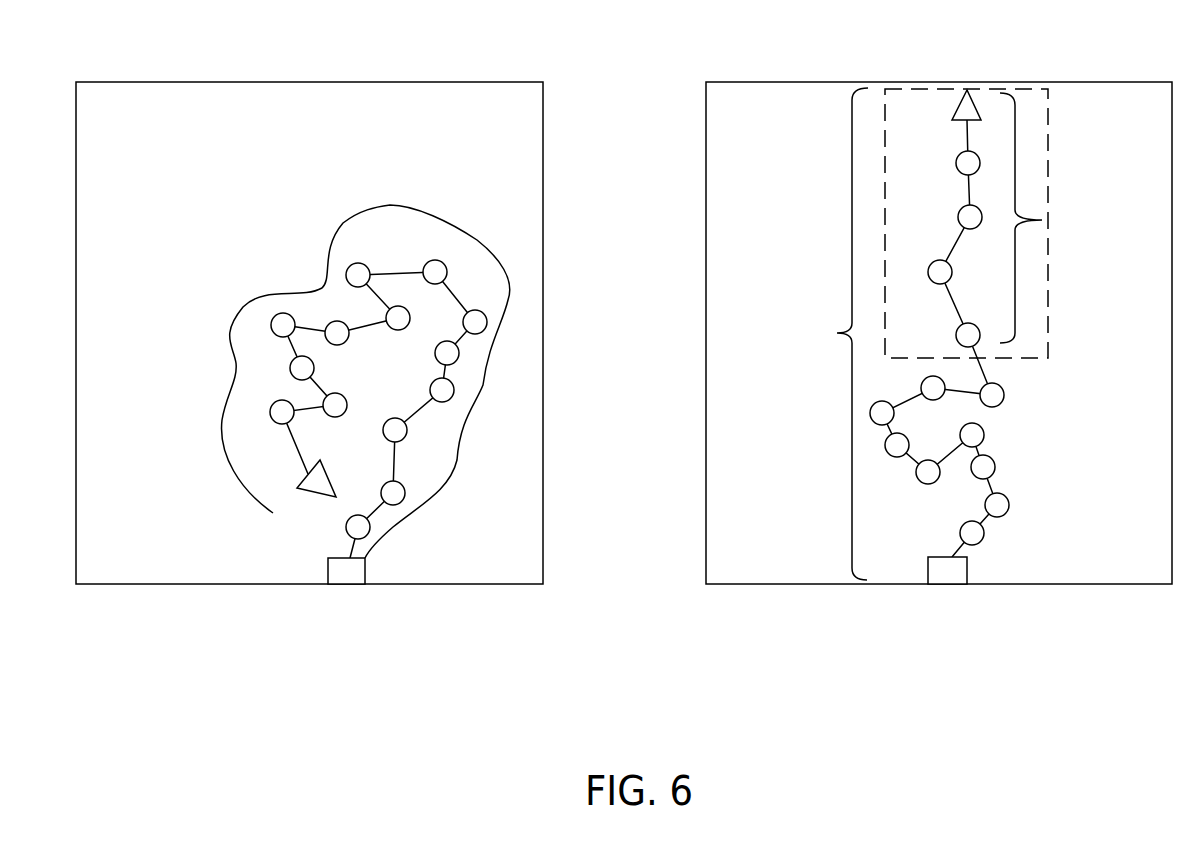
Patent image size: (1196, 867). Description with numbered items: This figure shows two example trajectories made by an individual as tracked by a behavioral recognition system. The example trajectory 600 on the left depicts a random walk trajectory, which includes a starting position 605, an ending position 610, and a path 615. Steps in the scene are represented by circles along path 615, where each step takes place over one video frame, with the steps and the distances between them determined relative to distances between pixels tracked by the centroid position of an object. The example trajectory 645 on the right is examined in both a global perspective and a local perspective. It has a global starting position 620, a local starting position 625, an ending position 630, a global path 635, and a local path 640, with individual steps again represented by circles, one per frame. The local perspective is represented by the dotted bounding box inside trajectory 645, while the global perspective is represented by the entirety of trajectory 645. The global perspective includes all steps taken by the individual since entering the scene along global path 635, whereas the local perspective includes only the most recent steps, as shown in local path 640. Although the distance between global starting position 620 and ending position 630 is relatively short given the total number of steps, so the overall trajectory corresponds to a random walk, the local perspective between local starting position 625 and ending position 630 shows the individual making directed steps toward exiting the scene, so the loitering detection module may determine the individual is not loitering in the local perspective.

The example trajectory 600 is at (138, 583).
The starting position 605 is at (367, 567).
The ending position 610 is at (310, 494).
The path 615 is at (420, 210).
The global starting position 620 is at (967, 567).
The local starting position 625 is at (955, 343).
The ending position 630 is at (973, 102).
The global path 635 is at (837, 333).
The local path 640 is at (1042, 220).
The example trajectory 645 is at (753, 583).